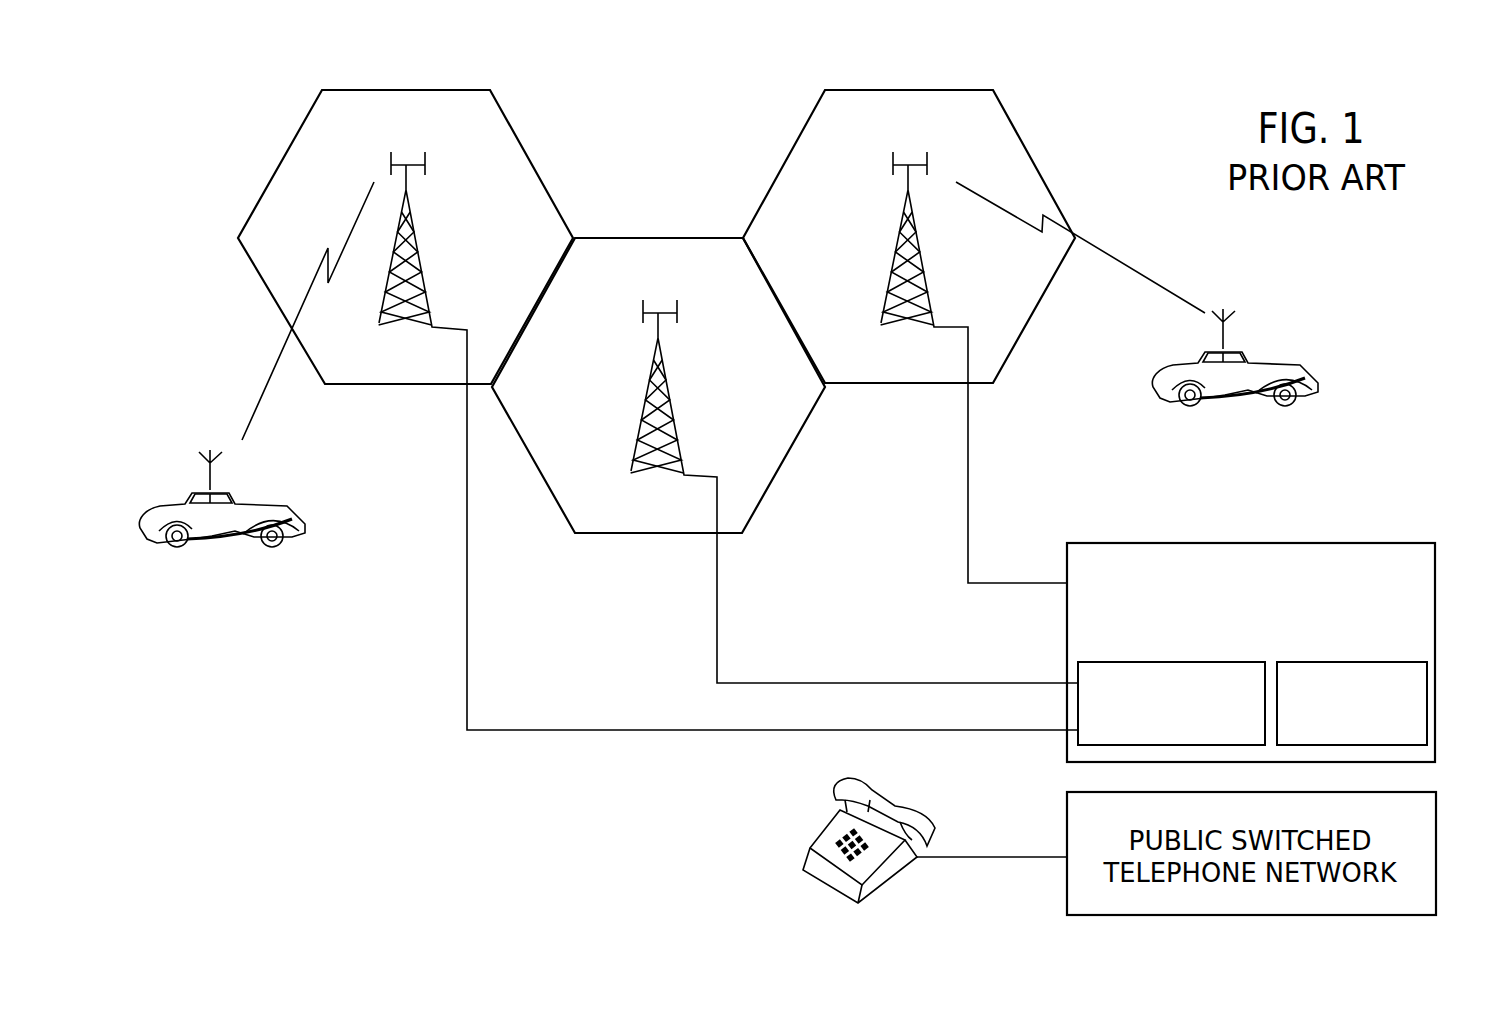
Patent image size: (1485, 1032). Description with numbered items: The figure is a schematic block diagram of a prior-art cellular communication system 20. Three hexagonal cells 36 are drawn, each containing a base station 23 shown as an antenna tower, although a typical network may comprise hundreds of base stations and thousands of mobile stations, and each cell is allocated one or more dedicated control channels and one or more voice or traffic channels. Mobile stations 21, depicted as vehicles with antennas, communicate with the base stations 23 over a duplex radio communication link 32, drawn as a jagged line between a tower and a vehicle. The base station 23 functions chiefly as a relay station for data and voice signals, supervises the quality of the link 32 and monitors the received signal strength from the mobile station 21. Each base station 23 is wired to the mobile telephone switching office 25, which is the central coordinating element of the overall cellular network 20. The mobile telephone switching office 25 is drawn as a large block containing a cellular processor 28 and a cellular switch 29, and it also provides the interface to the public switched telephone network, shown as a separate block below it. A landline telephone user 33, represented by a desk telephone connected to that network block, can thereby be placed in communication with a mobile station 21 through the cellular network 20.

The cellular communication system 20 is at (1038, 128).
The mobile station 21 is at (1283, 362).
The base station 23 is at (433, 248).
The mobile telephone switching office 25 is at (1343, 542).
The cellular processor 28 is at (1078, 662).
The cellular switch 29 is at (1430, 683).
The duplex radio communication link 32 is at (263, 390).
The landline telephone user 33 is at (820, 837).
The cell 36 is at (453, 92).